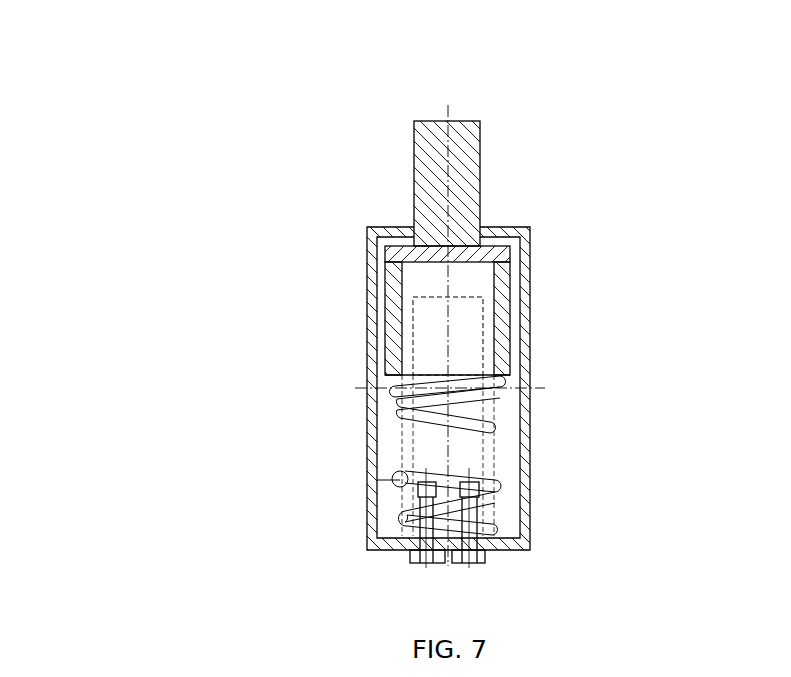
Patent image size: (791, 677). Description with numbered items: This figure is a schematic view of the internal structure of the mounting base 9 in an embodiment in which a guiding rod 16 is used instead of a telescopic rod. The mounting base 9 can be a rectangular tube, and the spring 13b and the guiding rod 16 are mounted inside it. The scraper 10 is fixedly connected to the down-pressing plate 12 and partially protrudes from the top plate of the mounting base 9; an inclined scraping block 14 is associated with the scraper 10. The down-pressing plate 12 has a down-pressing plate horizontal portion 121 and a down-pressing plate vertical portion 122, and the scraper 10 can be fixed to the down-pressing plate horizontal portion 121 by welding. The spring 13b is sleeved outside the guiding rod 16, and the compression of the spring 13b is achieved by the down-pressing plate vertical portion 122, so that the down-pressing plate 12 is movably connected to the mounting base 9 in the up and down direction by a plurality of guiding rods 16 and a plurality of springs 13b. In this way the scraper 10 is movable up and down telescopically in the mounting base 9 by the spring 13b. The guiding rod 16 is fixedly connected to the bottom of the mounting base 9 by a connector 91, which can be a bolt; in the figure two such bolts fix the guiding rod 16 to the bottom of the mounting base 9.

The mounting base 9 is at (523, 480).
The scraper 10 is at (413, 183).
The down-pressing plate 12 is at (505, 365).
The down-pressing plate horizontal portion 121 is at (396, 247).
The down-pressing plate vertical portion 122 is at (386, 283).
The spring 13b is at (395, 470).
The inclined scraping block 14 is at (497, 187).
The guiding rod 16 is at (483, 297).
The connector 91 is at (426, 529).